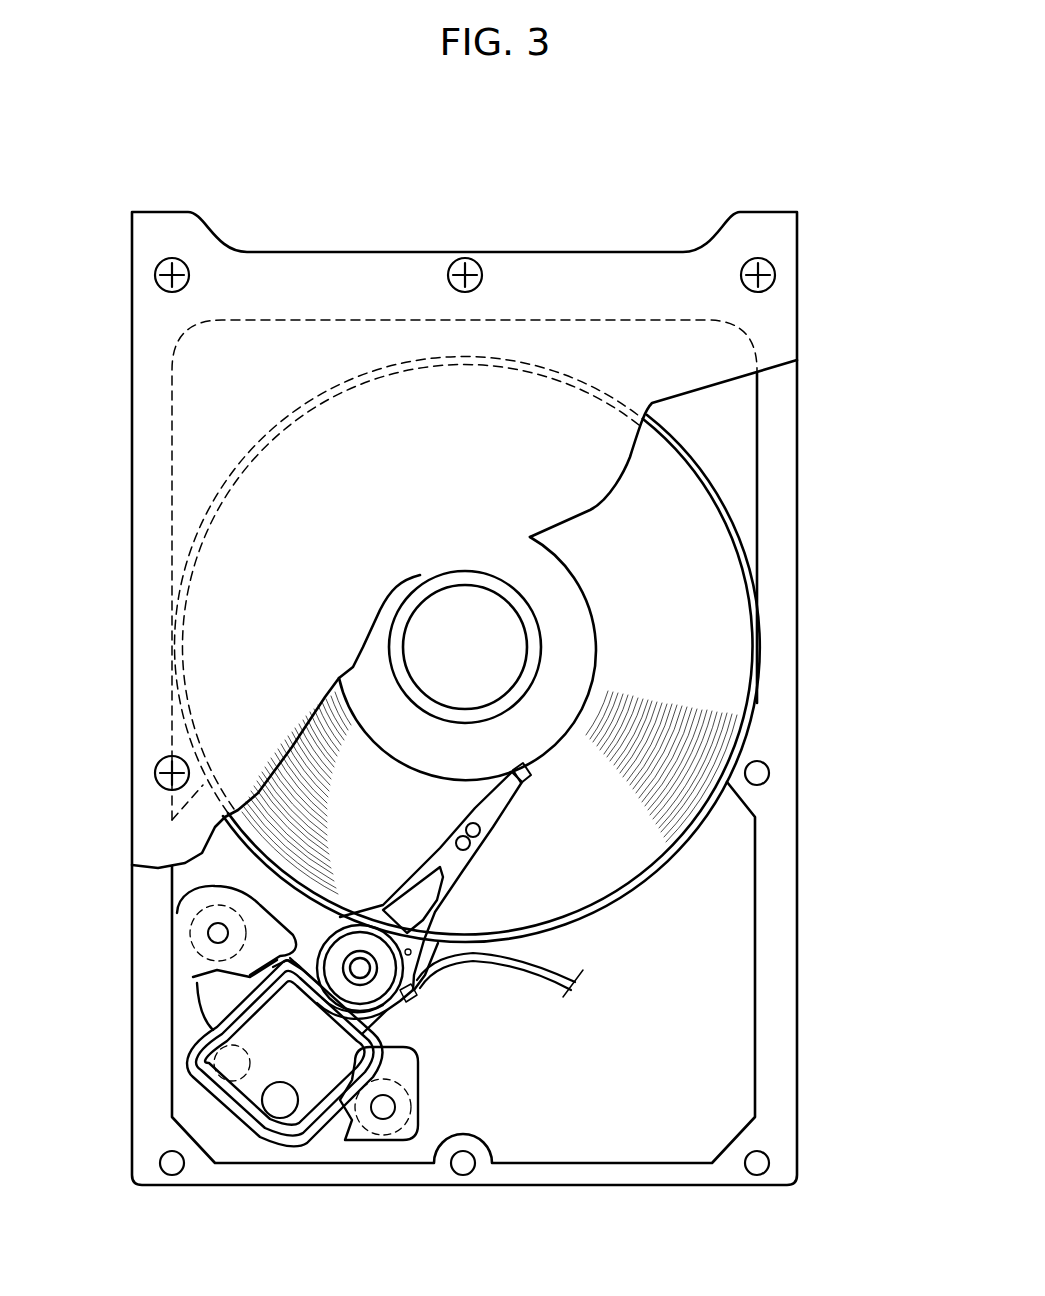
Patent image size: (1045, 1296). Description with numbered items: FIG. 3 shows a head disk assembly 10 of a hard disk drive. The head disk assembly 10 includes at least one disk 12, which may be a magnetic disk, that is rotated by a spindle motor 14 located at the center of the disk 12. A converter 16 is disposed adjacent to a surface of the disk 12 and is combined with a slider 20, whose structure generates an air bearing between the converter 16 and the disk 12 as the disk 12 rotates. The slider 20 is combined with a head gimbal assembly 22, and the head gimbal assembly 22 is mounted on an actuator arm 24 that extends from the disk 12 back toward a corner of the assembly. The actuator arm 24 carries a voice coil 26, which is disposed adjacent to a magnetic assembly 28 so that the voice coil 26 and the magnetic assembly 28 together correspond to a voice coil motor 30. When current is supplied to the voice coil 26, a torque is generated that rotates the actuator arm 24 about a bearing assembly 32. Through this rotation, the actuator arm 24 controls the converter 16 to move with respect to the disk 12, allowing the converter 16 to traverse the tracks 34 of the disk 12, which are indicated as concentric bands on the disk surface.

The head disk assembly 10 is at (727, 185).
The disk 12 is at (712, 582).
The spindle motor 14 is at (440, 625).
The converter 16 is at (525, 785).
The slider 20 is at (466, 905).
The head gimbal assembly 22 is at (503, 815).
The actuator arm 24 is at (273, 987).
The voice coil 26 is at (208, 1055).
The magnetic assembly 28 is at (215, 1000).
The voice coil motor 30 is at (333, 1120).
The bearing assembly 32 is at (373, 980).
The tracks 34 is at (297, 792).